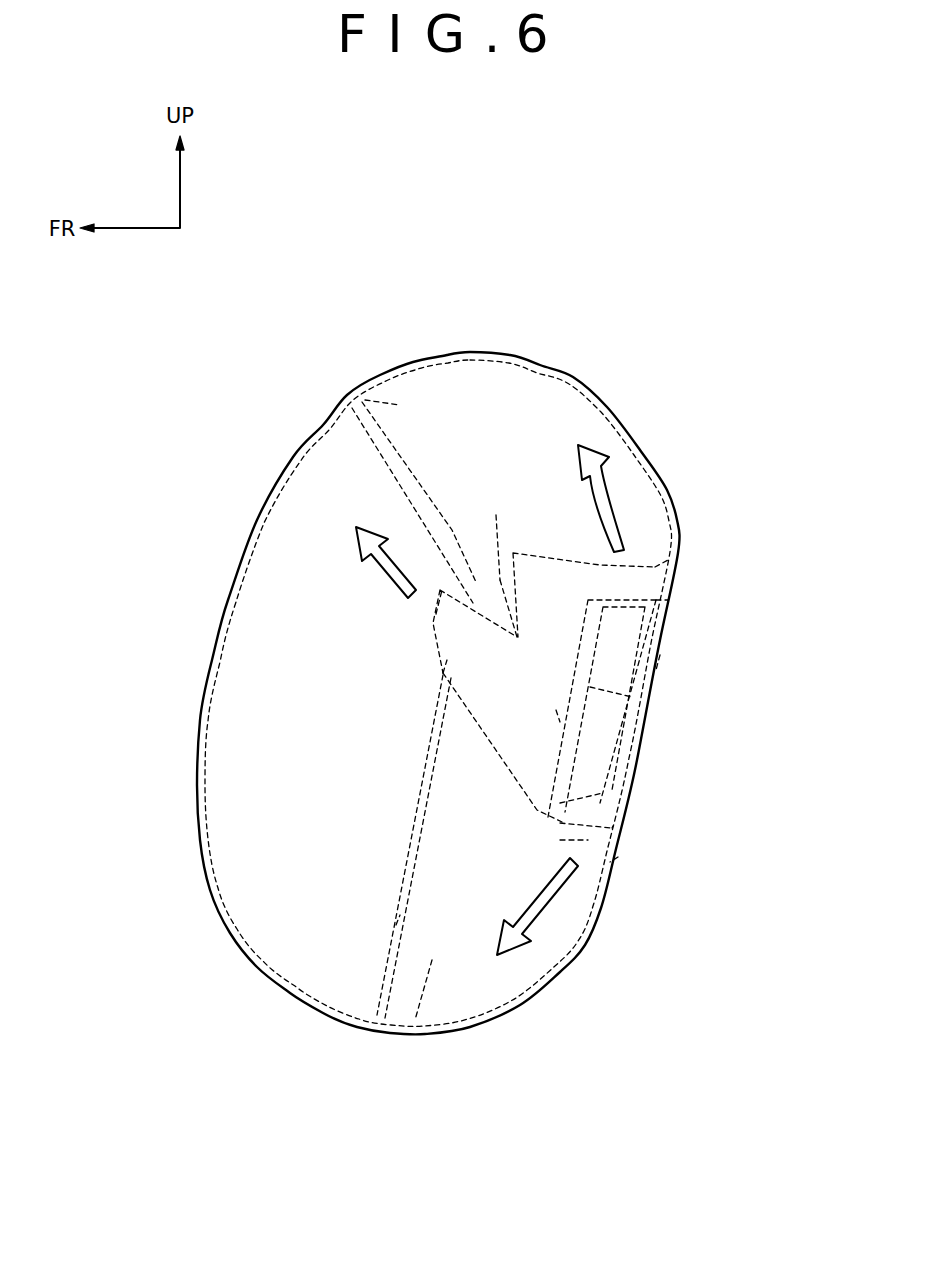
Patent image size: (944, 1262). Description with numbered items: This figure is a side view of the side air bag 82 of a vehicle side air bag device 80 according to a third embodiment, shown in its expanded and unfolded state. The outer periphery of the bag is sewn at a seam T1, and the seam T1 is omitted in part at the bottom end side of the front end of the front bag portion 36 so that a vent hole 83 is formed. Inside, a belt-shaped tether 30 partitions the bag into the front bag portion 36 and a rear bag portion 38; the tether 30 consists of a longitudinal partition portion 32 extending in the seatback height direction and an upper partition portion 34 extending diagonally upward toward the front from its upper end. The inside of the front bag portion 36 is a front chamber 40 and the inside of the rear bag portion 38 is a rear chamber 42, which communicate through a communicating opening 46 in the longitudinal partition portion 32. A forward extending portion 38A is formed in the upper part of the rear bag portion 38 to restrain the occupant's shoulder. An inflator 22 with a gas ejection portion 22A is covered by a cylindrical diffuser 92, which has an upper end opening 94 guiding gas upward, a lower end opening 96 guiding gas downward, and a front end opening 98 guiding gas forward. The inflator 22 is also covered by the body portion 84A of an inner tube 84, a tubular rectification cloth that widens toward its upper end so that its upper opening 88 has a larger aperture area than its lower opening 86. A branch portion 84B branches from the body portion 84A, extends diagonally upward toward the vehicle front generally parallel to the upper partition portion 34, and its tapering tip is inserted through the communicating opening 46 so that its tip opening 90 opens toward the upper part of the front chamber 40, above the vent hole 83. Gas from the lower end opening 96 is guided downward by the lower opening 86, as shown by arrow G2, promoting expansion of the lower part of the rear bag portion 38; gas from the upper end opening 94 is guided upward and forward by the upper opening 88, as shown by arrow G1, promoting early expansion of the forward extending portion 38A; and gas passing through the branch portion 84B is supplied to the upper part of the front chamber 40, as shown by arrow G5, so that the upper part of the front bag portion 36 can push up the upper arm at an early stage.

The inflator 22 is at (650, 760).
The gas ejection portion 22A is at (655, 700).
The tether 30 is at (409, 851).
The longitudinal partition portion 32 is at (400, 918).
The upper partition portion 34 is at (392, 456).
The front bag portion 36 is at (297, 643).
The rear bag portion 38 is at (458, 950).
The forward extending portion 38A is at (410, 405).
The front chamber 40 is at (267, 707).
The rear chamber 42 is at (400, 1031).
The communicating opening 46 is at (443, 673).
The vehicle side air bag device 80 is at (568, 336).
The side air bag 82 is at (262, 506).
The vent hole 83 is at (204, 772).
The inner tube 84 is at (560, 546).
The body portion 84A is at (486, 532).
The branch portion 84B is at (477, 720).
The lower opening 86 is at (618, 857).
The upper opening 88 is at (668, 560).
The tip opening 90 is at (435, 617).
The diffuser 92 is at (660, 655).
The upper end opening 94 is at (668, 601).
The lower end opening 96 is at (613, 827).
The front end opening 98 is at (556, 710).
The arrow G1 is at (617, 497).
The arrow G2 is at (545, 923).
The arrow G5 is at (374, 576).
The seam T1 is at (243, 947).